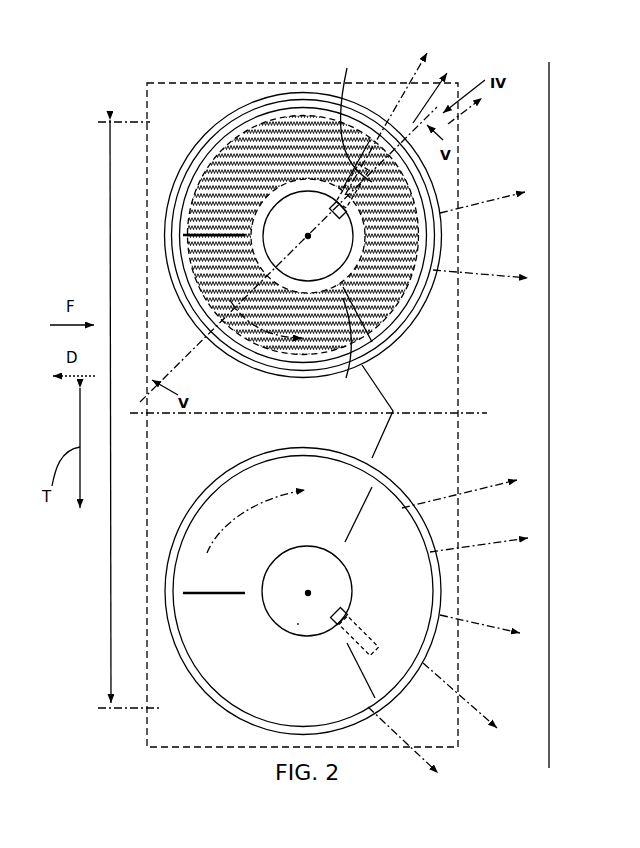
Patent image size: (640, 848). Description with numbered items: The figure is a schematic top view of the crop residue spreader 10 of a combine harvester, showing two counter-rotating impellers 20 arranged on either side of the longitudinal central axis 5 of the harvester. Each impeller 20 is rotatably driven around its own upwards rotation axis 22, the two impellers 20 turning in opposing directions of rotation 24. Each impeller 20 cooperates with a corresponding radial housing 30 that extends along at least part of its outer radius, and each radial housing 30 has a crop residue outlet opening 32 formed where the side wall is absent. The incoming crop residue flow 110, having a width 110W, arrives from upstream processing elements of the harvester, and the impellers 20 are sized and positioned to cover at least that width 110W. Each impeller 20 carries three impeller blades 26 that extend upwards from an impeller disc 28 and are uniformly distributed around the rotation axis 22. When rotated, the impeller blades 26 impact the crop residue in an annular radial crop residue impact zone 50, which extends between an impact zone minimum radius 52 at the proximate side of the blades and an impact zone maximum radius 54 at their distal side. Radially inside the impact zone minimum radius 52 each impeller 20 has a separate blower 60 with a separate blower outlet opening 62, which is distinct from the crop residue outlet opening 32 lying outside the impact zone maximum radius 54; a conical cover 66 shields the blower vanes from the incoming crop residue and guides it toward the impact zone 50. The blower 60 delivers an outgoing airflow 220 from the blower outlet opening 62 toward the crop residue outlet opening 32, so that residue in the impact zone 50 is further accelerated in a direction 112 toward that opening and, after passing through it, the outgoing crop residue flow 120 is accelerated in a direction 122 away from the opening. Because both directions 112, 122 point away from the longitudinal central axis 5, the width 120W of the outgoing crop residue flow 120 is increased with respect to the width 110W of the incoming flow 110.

The longitudinal central axis 5 is at (293, 413).
The crop residue spreader 10 is at (258, 78).
The impeller 20 is at (257, 363).
The rotation axis 22 is at (303, 247).
The direction of rotation 24 is at (237, 300).
The impeller blade 26 is at (333, 696).
The impeller disc 28 is at (180, 193).
The radial housing 30 is at (227, 362).
The crop residue outlet opening 32 is at (450, 228).
The radial crop residue impact zone 50 is at (250, 200).
The impact zone minimum radius 52 is at (270, 180).
The impact zone maximum radius 54 is at (217, 135).
The blower 60 is at (295, 203).
The blower outlet opening 62 is at (353, 210).
The cover 66 is at (298, 623).
The incoming crop residue flow 110 is at (116, 133).
The width of the incoming crop residue flow 110W is at (108, 212).
The direction of further acceleration 112 is at (383, 175).
The outgoing crop residue flow 120 is at (463, 128).
The width of the outgoing crop residue flow 120W is at (552, 198).
The direction of further acceleration of the outgoing flow 122 is at (420, 100).
The outgoing airflow 220 is at (325, 215).